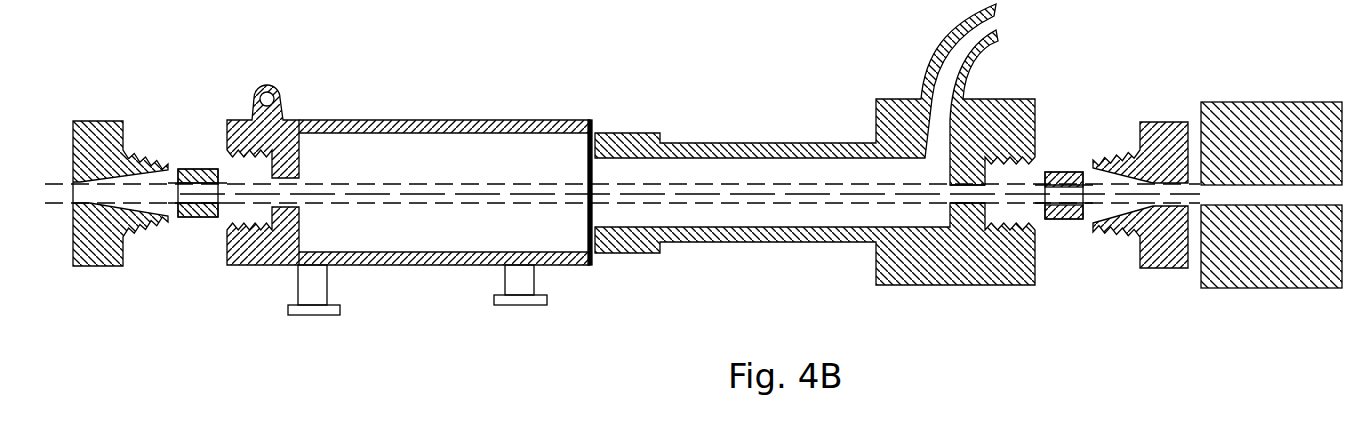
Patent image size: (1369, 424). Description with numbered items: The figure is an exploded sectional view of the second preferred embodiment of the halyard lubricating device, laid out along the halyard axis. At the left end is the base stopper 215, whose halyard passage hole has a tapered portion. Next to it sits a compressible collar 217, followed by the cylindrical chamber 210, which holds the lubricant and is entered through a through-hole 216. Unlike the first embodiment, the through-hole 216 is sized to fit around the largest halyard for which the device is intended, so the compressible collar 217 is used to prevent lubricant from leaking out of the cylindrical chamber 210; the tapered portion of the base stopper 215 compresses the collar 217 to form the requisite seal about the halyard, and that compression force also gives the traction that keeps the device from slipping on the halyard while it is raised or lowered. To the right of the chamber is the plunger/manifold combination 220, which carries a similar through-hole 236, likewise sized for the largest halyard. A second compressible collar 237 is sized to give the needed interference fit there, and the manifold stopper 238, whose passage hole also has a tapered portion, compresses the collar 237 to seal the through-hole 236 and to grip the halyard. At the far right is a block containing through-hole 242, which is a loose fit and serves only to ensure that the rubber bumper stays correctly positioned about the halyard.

The base stopper 215 is at (102, 125).
The compressible collar 217 is at (197, 169).
The through-hole 216 is at (270, 233).
The cylindrical chamber 210 is at (433, 125).
The plunger/manifold combination 220 is at (890, 113).
The through-hole 236 is at (970, 197).
The compressible collar 237 is at (1063, 173).
The manifold stopper 238 is at (1157, 130).
The through-hole 242 is at (1260, 197).